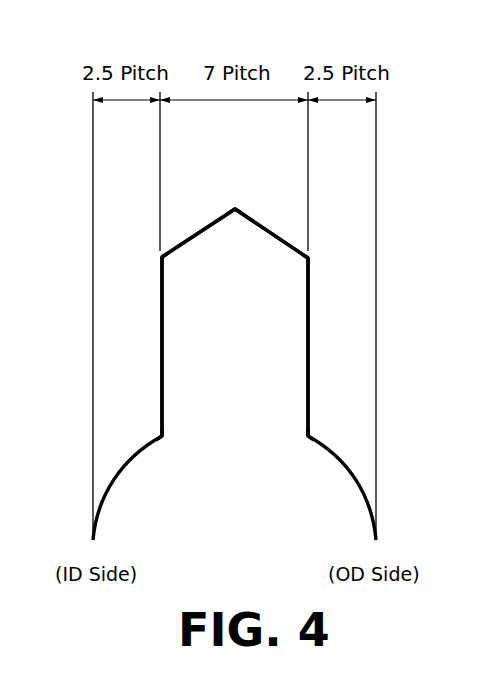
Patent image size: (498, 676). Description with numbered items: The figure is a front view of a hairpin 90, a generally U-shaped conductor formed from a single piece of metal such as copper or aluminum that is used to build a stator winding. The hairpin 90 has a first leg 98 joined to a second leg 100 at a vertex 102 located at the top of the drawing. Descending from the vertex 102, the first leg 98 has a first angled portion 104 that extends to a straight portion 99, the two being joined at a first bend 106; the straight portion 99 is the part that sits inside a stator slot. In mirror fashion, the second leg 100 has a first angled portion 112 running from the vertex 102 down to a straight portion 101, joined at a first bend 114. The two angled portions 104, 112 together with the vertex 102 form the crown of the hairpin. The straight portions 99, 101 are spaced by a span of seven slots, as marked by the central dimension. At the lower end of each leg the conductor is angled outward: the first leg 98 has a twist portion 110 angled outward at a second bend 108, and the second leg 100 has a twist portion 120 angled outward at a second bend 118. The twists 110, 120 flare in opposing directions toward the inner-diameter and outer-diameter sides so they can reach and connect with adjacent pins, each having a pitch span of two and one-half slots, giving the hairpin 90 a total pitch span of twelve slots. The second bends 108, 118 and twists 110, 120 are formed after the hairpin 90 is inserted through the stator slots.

The hairpin 90 is at (173, 48).
The first leg 98 is at (307, 400).
The straight portion 99 is at (310, 320).
The second leg 100 is at (160, 400).
The straight portion 101 is at (163, 380).
The vertex 102 is at (235, 207).
The first angled portion 104 is at (275, 234).
The first bend 106 is at (303, 260).
The second bend 108 is at (303, 437).
The twist portion 110 is at (350, 474).
The first angled portion 112 is at (192, 233).
The first bend 114 is at (165, 262).
The second bend 118 is at (165, 437).
The twist portion 120 is at (122, 472).